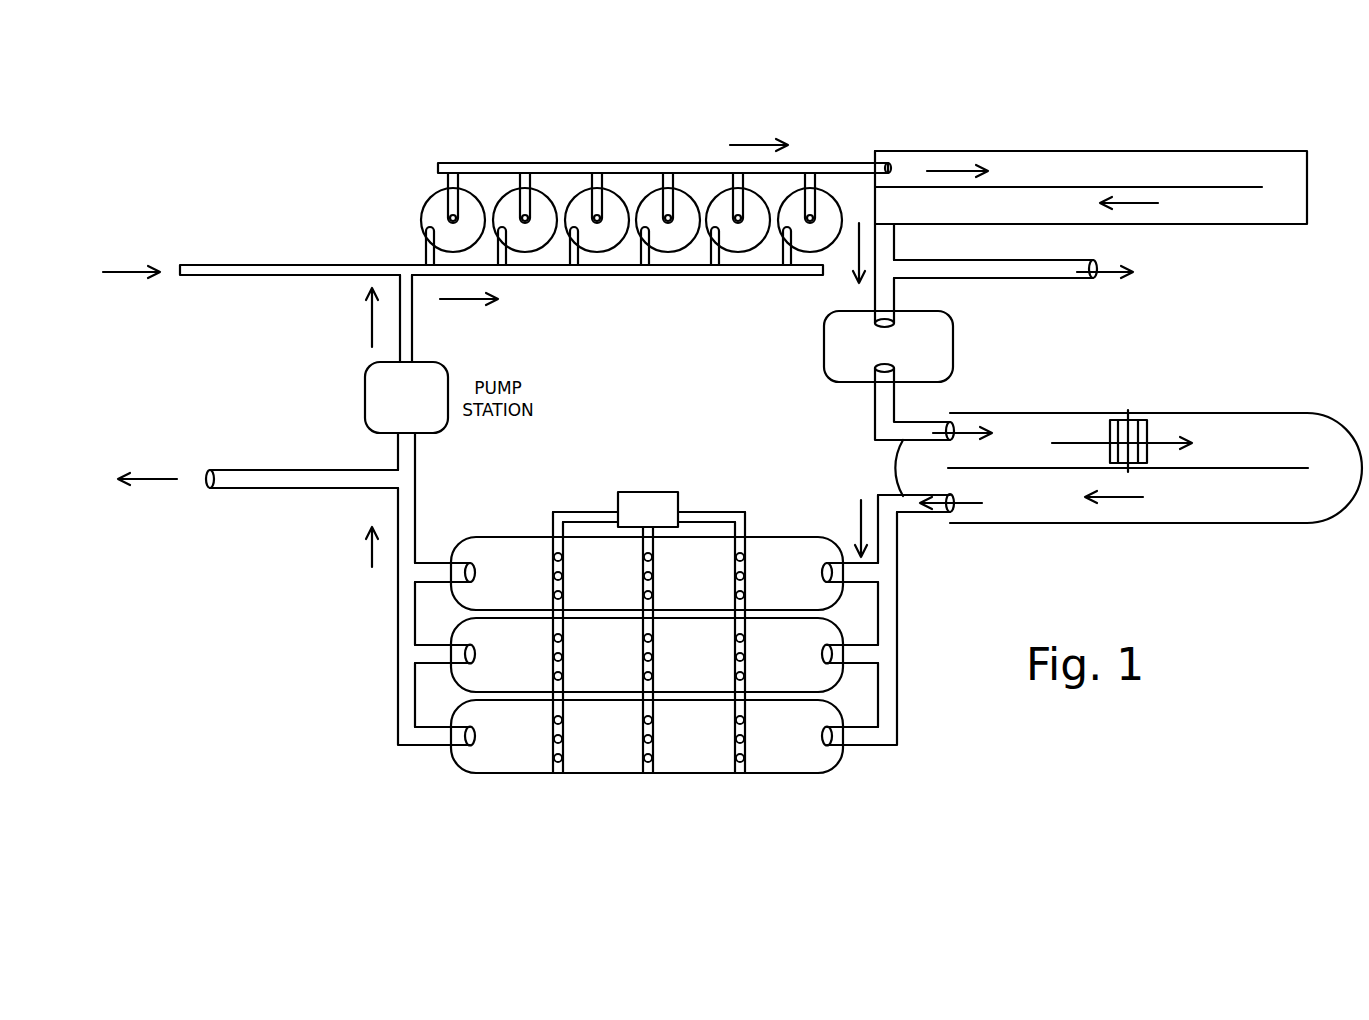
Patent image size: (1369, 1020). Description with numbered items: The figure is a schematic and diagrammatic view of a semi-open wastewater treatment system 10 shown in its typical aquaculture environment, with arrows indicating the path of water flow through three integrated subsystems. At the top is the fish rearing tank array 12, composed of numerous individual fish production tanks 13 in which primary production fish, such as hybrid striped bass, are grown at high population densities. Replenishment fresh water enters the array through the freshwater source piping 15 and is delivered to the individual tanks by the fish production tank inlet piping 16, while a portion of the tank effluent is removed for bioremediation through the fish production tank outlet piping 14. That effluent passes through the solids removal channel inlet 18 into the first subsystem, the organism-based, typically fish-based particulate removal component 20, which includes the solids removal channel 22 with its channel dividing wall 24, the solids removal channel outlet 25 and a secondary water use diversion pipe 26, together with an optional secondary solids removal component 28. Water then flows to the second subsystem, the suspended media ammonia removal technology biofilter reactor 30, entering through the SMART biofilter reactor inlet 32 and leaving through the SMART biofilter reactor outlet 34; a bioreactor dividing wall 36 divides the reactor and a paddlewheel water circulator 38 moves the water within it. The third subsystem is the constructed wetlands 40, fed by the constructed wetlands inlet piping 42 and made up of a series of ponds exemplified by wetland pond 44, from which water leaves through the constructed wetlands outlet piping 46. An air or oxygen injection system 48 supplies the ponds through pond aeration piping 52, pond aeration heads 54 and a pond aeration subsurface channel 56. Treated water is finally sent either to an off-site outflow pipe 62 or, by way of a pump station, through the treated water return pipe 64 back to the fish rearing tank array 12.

The wastewater treatment system 10 is at (275, 185).
The fish rearing tank array 12 is at (562, 135).
The fish production tank 13 is at (427, 210).
The fish production tank outlet piping 14 is at (675, 163).
The freshwater source piping 15 is at (243, 276).
The fish production tank inlet piping 16 is at (630, 276).
The solids removal channel inlet 18 is at (875, 163).
The organism-based particulate removal component 20 is at (1038, 128).
The solids removal channel 22 is at (1087, 165).
The channel dividing wall 24 is at (1193, 187).
The solids removal channel outlet 25 is at (882, 243).
The secondary water use diversion pipe 26 is at (1065, 270).
The secondary solids removal component 28 is at (847, 348).
The SMART biofilter reactor 30 is at (1098, 379).
The SMART biofilter reactor inlet 32 is at (923, 430).
The SMART biofilter reactor outlet 34 is at (940, 510).
The bioreactor dividing wall 36 is at (1255, 468).
The paddlewheel water circulator 38 is at (1143, 455).
The constructed wetlands 40 is at (350, 626).
The constructed wetlands inlet piping 42 is at (882, 633).
The wetland pond 44 is at (758, 758).
The constructed wetlands outlet piping 46 is at (397, 589).
The air or oxygen injection system 48 is at (650, 490).
The pond aeration piping 52 is at (567, 515).
The pond aeration head 54 is at (747, 558).
The pond aeration subsurface channel 56 is at (563, 773).
The off-site outflow pipe 62 is at (282, 478).
The treated water return pipe 64 is at (407, 320).